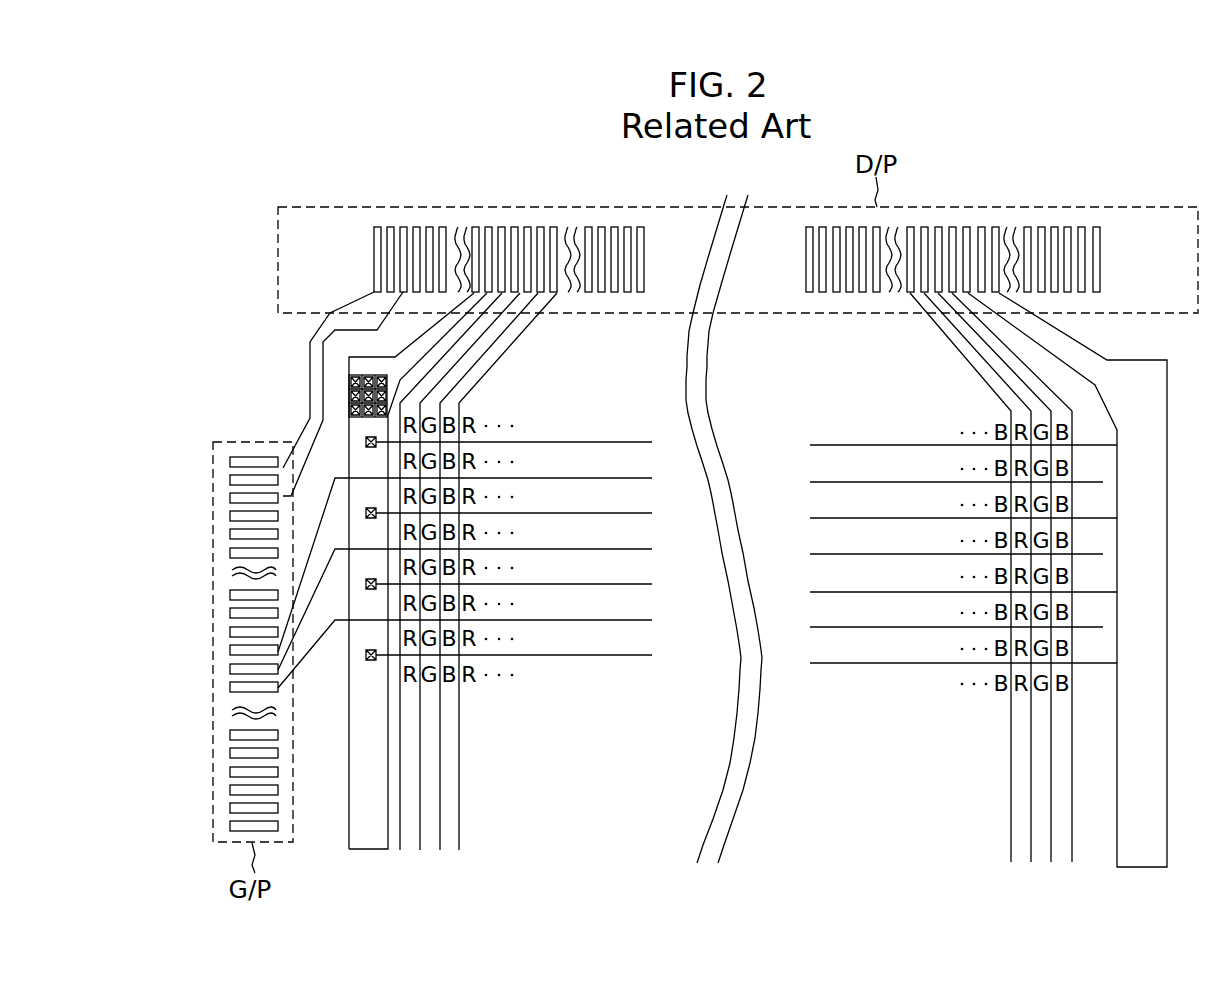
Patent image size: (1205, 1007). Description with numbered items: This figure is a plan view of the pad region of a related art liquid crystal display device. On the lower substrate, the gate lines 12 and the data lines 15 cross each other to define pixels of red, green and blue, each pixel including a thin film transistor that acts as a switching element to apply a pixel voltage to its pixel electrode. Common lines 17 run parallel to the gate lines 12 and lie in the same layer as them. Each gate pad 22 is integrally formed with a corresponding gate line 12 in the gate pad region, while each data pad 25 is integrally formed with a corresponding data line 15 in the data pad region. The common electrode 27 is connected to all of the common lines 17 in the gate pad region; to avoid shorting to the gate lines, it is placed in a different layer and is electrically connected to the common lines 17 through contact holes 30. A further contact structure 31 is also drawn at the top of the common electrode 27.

The gate line 12 is at (690, 598).
The data line 15 is at (478, 571).
The common line 17 is at (746, 600).
The gate pad 22 is at (219, 644).
The data pad 25 is at (509, 231).
The common electrode 27 is at (418, 602).
The contact hole 30 is at (340, 582).
The contact pad 31 is at (330, 394).